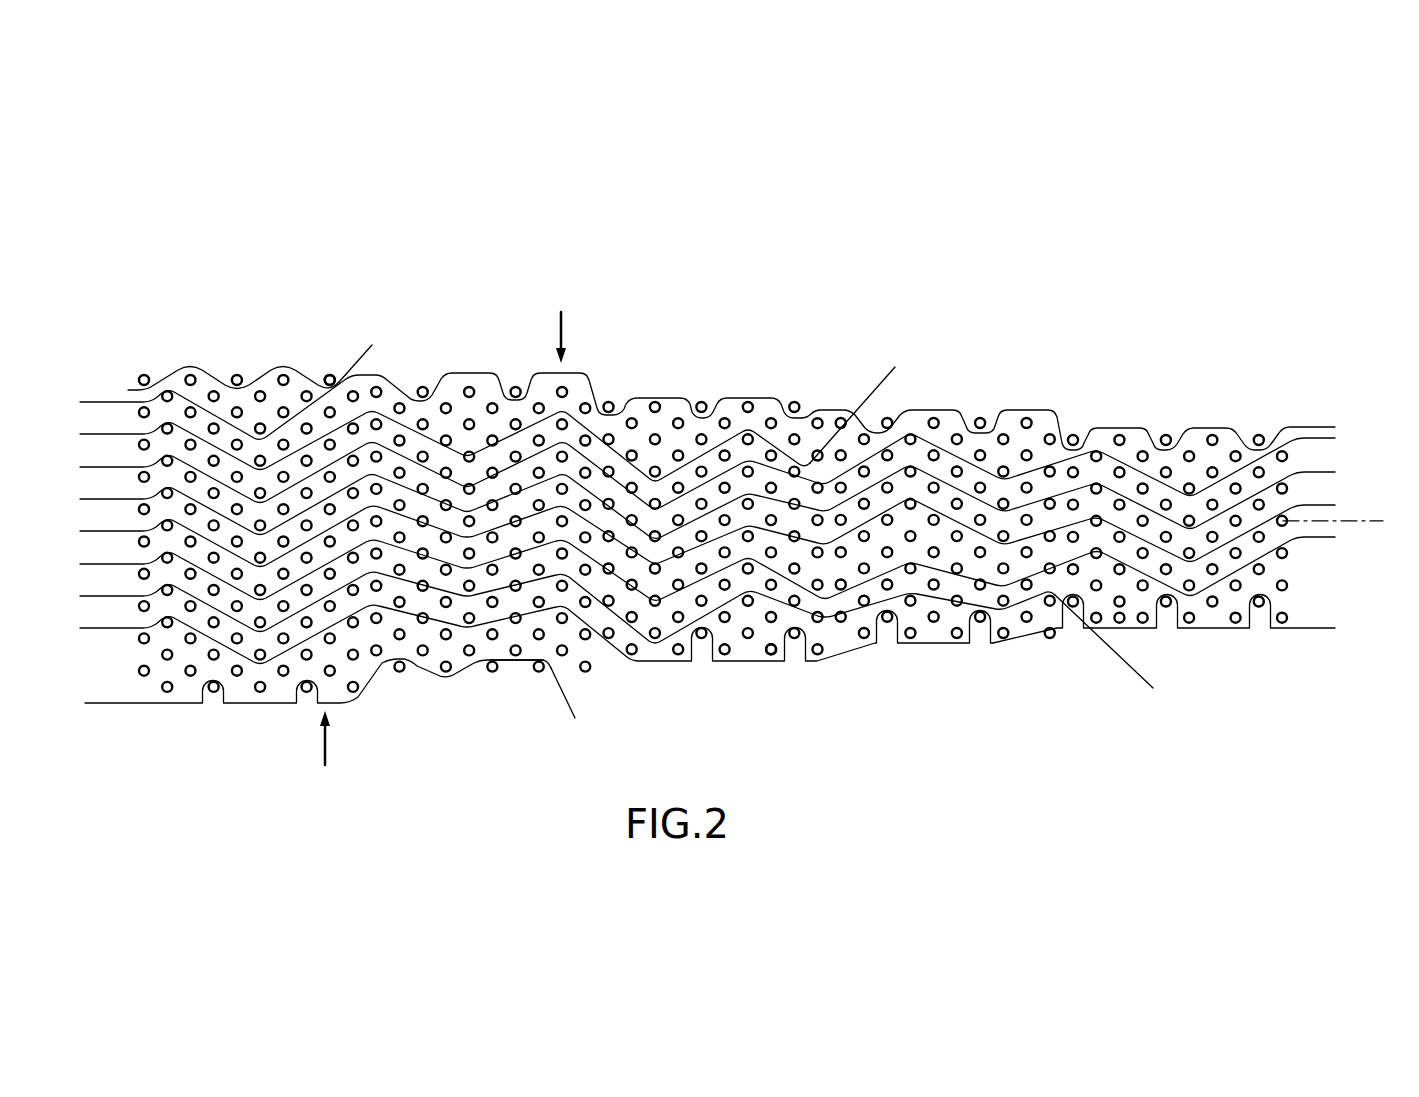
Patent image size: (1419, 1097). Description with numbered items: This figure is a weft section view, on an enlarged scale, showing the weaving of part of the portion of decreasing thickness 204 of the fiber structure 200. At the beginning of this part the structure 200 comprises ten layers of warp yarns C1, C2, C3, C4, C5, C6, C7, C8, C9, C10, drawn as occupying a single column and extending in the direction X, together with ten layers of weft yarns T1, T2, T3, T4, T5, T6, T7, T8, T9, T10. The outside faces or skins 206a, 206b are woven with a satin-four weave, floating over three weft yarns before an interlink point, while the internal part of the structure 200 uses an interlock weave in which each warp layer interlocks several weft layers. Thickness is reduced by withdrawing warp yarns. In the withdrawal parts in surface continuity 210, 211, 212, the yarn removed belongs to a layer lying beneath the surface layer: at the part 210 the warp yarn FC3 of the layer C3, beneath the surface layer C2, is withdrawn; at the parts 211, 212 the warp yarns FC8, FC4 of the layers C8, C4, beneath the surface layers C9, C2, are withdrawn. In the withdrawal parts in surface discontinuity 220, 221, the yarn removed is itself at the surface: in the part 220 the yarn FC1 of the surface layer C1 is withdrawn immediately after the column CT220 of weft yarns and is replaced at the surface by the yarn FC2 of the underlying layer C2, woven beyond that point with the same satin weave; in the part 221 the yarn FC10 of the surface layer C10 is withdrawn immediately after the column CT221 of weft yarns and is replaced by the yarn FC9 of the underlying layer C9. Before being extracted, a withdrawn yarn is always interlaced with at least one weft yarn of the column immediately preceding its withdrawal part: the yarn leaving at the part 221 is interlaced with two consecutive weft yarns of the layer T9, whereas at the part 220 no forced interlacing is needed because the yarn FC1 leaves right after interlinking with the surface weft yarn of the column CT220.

The fiber structure 200 is at (778, 258).
The portion of decreasing thickness 204 is at (281, 343).
The outside face or skin 206a is at (666, 386).
The outside face or skin 206b is at (785, 675).
The withdrawal part in surface continuity 210 is at (853, 398).
The withdrawal part in surface continuity 211 is at (1110, 637).
The withdrawal part in surface continuity 212 is at (1269, 428).
The withdrawal part in surface discontinuity 220 is at (325, 357).
The withdrawal part in surface discontinuity 221 is at (540, 680).
The column of weft yarns CT220 is at (333, 743).
The column of weft yarns CT221 is at (567, 328).
The layer of warp yarns C1 is at (126, 390).
The layer of warp yarns C2 is at (693, 411).
The layer of warp yarns C3 is at (431, 447).
The layer of warp yarns C4 is at (693, 472).
The layer of warp yarns C5 is at (693, 503).
The layer of warp yarns C6 is at (693, 533).
The layer of warp yarns C7 is at (693, 568).
The layer of warp yarns C8 is at (553, 607).
The layer of warp yarns C9 is at (693, 629).
The layer of warp yarns C10 is at (300, 685).
The layer of weft yarns T1 is at (128, 380).
The layer of weft yarns T2 is at (128, 412).
The layer of weft yarns T3 is at (128, 445).
The layer of weft yarns T4 is at (128, 477).
The layer of weft yarns T5 is at (128, 509).
The layer of weft yarns T6 is at (128, 542).
The layer of weft yarns T7 is at (128, 574).
The layer of weft yarns T8 is at (128, 606).
The layer of weft yarns T9 is at (128, 638).
The layer of weft yarns T10 is at (128, 671).
The warp yarn FC1 is at (373, 358).
The warp yarn FC2 is at (472, 384).
The warp yarn FC3 is at (869, 414).
The warp yarn FC4 is at (1335, 438).
The warp yarn FC8 is at (1142, 678).
The warp yarn FC9 is at (1335, 628).
The warp yarn FC10 is at (577, 717).
The direction X is at (1352, 527).